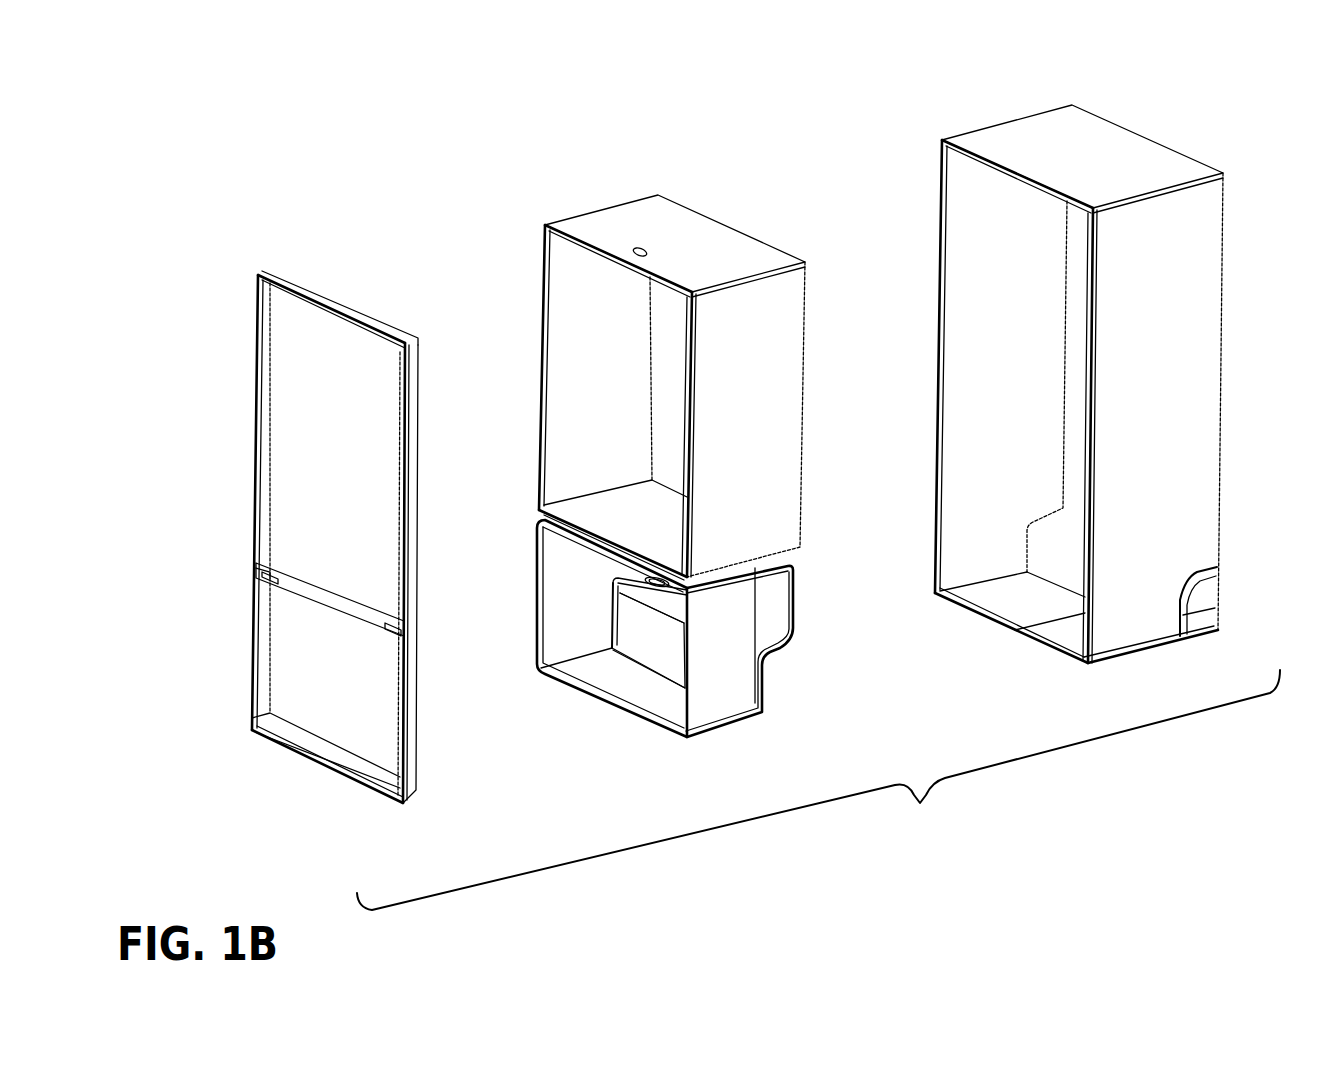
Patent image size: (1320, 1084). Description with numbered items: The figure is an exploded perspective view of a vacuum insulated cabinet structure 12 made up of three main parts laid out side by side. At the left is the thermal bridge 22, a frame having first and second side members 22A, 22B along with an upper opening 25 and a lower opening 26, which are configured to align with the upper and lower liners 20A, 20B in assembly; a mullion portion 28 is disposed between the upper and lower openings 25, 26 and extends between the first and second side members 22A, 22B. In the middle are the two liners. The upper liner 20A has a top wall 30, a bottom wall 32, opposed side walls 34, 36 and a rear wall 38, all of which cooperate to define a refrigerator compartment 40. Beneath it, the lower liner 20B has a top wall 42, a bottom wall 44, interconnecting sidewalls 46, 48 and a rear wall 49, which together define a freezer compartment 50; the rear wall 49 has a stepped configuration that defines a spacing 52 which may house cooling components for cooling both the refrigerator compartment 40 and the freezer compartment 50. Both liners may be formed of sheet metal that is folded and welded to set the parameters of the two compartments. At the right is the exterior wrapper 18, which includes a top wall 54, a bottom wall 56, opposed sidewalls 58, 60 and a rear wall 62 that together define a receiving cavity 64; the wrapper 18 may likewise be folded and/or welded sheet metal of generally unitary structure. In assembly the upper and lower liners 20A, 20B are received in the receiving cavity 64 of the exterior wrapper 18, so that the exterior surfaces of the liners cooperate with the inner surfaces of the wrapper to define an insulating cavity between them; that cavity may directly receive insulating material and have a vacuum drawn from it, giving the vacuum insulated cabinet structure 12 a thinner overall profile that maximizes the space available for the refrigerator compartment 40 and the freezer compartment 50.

The vacuum insulated cabinet structure 12 is at (818, 790).
The exterior wrapper 18 is at (1071, 377).
The upper liner 20A is at (659, 358).
The lower liner 20B is at (656, 651).
The thermal bridge 22 is at (273, 502).
The first side member 22A is at (250, 460).
The second side member 22B is at (398, 413).
The upper opening 25 is at (253, 292).
The lower opening 26 is at (248, 673).
The mullion portion 28 is at (312, 602).
The top wall 30 is at (702, 242).
The bottom wall 32 is at (597, 510).
The side wall 34 is at (577, 413).
The side wall 36 is at (783, 377).
The rear wall 38 is at (678, 318).
The refrigerator compartment 40 is at (597, 378).
The top wall 42 is at (782, 557).
The bottom wall 44 is at (593, 675).
The sidewall 46 is at (570, 582).
The sidewall 48 is at (718, 703).
The rear wall 49 is at (673, 643).
The freezer compartment 50 is at (647, 630).
The spacing 52 is at (763, 662).
The top wall 54 is at (1097, 140).
The bottom wall 56 is at (1065, 638).
The sidewall 58 is at (960, 187).
The sidewall 60 is at (1187, 507).
The rear wall 62 is at (1077, 347).
The receiving cavity 64 is at (1028, 407).